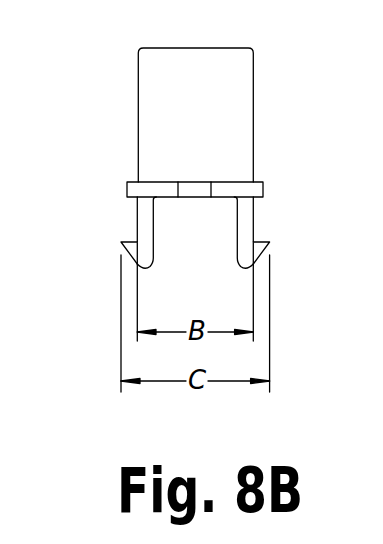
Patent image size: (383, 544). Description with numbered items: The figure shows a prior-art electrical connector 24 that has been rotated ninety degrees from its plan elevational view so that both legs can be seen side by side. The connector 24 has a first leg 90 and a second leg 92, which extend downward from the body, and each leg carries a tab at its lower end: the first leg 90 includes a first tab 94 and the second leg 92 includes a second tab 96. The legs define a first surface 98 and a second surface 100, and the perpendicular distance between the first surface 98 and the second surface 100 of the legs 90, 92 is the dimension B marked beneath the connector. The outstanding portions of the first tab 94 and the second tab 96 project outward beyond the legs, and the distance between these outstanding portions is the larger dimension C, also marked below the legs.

The connector 24 is at (235, 67).
The first leg 90 is at (248, 213).
The second leg 92 is at (142, 208).
The first tab 94 is at (270, 243).
The second tab 96 is at (122, 243).
The first surface 98 is at (270, 224).
The second surface 100 is at (122, 226).